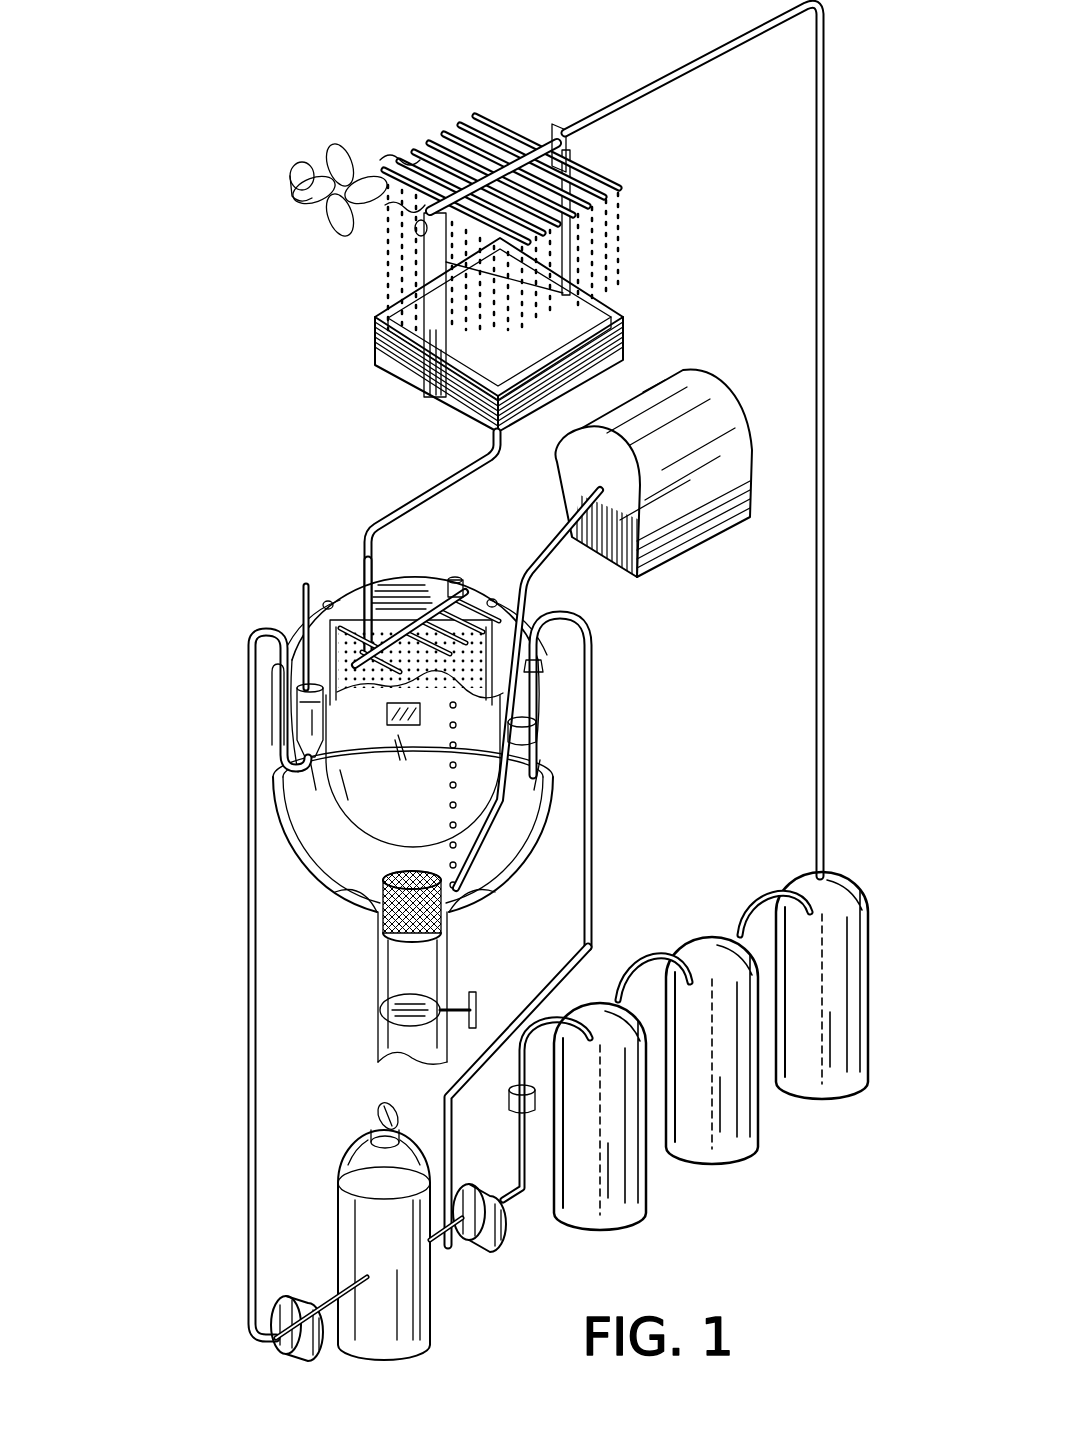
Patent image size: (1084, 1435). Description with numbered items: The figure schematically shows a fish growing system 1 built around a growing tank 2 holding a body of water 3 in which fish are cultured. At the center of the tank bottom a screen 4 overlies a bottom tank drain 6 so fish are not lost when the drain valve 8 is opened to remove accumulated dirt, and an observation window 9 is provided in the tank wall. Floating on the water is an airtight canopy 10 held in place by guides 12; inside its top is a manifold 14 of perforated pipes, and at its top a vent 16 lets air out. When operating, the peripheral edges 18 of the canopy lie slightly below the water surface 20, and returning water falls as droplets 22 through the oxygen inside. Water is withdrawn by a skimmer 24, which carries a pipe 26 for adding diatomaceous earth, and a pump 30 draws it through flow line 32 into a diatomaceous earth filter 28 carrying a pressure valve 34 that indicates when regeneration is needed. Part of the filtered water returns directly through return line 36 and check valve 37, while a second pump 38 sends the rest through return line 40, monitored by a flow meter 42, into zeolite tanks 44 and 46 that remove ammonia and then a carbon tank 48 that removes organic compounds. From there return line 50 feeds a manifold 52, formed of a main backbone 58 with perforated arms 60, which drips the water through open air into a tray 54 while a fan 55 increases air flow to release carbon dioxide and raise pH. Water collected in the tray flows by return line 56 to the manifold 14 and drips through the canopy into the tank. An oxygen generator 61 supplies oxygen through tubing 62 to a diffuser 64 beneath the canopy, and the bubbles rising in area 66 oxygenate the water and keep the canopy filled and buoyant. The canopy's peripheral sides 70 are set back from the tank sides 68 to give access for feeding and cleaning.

The fish growing system/apparatus 1 is at (195, 596).
The growing tank 2 is at (525, 770).
The body of water 3 is at (550, 762).
The screen or filter 4 is at (375, 895).
The bottom tank drain 6 is at (450, 975).
The drain valve 8 is at (478, 1012).
The observation window 9 is at (405, 735).
The canopy or enclosure 10 is at (382, 583).
The guides 12 is at (325, 600).
The manifold 14 is at (430, 596).
The vent 16 is at (462, 581).
The peripheral edges 18 is at (345, 755).
The surface 20 is at (392, 690).
The water droplets 22 is at (538, 627).
The skimmer 24 is at (298, 704).
The pipe 26 is at (292, 603).
The diatomaceous earth filter 28 is at (345, 1224).
The pump 30 is at (278, 1352).
The flow line 32 is at (250, 1040).
The pressure valve 34 is at (385, 1103).
The return line 36 is at (592, 862).
The check valve 37 is at (540, 737).
The second pump 38 is at (492, 1254).
The return line 40 is at (520, 1152).
The flow meter 42 is at (512, 1102).
The zeolite containing tank 44 is at (605, 1240).
The zeolite containing tank 46 is at (735, 1162).
The fiberglass tank 48 is at (835, 1102).
The return line 50 is at (817, 700).
The manifold 52 is at (502, 118).
The tray 54 is at (622, 340).
The fan 55 is at (312, 160).
The return line 56 is at (455, 480).
The main backbone 58 is at (533, 147).
The arms 60 is at (610, 177).
The oxygen generator 61 is at (707, 400).
The tubing 62 is at (537, 557).
The oxygen diffuser 64 is at (462, 905).
The area 66 is at (462, 808).
The sides 68 is at (560, 690).
The peripheral sides 70 is at (358, 622).